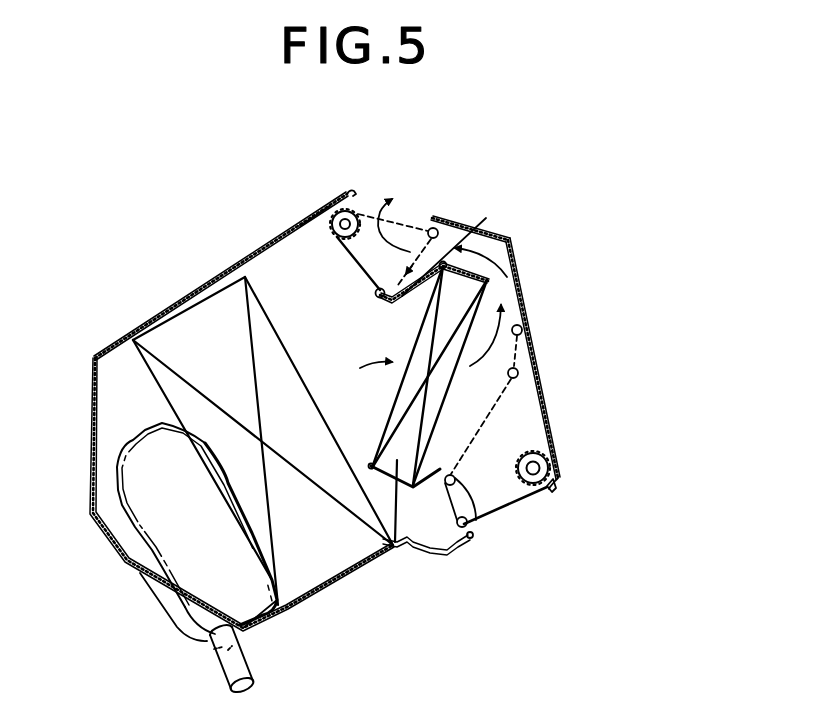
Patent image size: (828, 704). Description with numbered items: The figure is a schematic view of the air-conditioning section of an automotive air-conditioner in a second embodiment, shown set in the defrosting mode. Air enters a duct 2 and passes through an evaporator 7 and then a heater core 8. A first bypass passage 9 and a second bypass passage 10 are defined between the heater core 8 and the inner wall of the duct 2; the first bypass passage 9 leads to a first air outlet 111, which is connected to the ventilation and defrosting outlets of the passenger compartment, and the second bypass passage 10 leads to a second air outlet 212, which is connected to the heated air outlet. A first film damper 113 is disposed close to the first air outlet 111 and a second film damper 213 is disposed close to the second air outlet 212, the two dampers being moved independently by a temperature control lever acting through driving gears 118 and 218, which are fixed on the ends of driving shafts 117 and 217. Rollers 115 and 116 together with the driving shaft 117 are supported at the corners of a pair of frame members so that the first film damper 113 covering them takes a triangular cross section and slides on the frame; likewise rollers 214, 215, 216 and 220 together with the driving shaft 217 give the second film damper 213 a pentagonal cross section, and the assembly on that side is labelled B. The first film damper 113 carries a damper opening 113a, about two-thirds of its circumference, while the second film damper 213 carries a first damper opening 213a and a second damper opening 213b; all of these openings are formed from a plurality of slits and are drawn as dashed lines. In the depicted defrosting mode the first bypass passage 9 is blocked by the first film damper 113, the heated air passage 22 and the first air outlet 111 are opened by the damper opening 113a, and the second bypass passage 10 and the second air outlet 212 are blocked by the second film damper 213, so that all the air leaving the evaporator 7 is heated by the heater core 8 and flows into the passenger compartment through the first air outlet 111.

The duct 2 is at (197, 293).
The evaporator 7 is at (175, 332).
The heater core 8 is at (397, 545).
The first bypass passage 9 is at (298, 273).
The second bypass passage 10 is at (427, 520).
The heated air passage 22 is at (468, 390).
The first air outlet 111 is at (433, 217).
The first film damper 113 is at (357, 289).
The damper opening 113a is at (472, 254).
The roller 115 is at (448, 224).
The roller 116 is at (380, 298).
The driving shaft 117 is at (322, 212).
The driving gear 118 is at (362, 210).
The second air outlet 212 is at (550, 494).
The second film damper 213 is at (504, 522).
The first damper opening 213a is at (481, 425).
The second damper opening 213b is at (550, 443).
The roller 214 is at (476, 520).
The roller 215 is at (468, 540).
The roller 216 is at (518, 374).
The driving shaft 217 is at (562, 466).
The driving gear 218 is at (540, 468).
The roller 220 is at (522, 331).
The assembly B is at (549, 310).